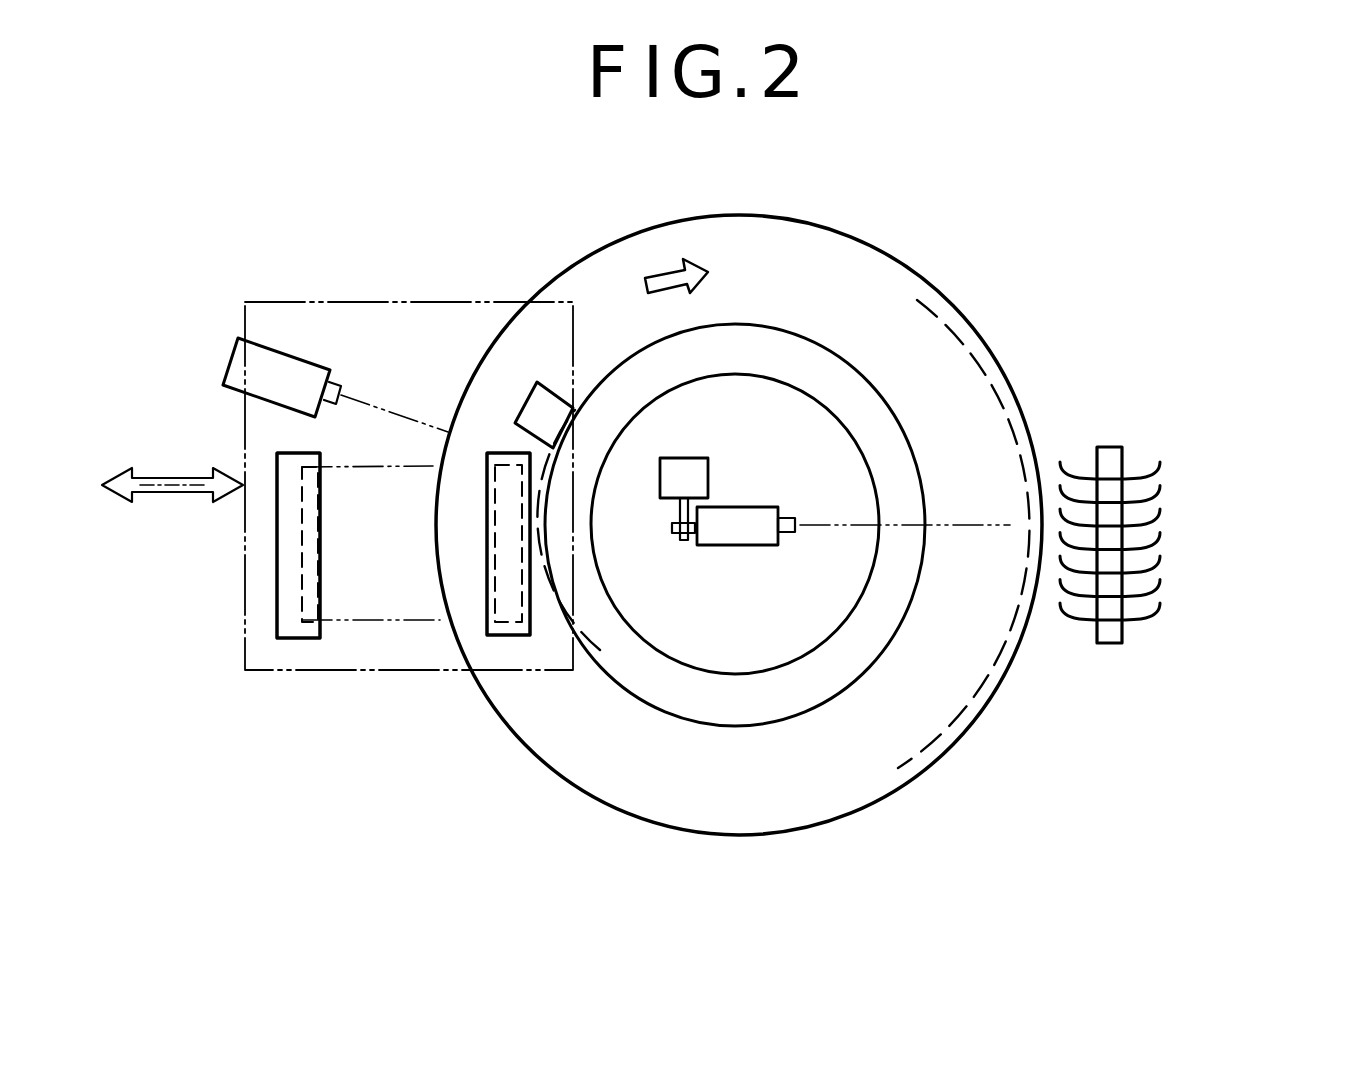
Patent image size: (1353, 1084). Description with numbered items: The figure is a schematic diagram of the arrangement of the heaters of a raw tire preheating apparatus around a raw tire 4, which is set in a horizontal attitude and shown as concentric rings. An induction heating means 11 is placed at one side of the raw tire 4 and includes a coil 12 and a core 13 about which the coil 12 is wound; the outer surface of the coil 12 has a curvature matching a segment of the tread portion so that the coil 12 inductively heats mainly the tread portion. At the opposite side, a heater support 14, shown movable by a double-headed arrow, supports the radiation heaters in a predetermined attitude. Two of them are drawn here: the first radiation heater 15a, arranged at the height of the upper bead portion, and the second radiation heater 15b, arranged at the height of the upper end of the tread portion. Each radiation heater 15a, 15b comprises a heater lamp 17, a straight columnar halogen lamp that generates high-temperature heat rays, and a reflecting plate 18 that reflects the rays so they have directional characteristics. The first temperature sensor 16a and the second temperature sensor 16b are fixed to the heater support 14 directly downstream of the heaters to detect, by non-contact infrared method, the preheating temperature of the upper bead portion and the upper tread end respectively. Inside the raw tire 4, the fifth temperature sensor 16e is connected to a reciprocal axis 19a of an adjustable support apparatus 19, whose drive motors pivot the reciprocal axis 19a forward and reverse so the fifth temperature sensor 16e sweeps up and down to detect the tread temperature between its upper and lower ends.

The raw tire 4 is at (791, 847).
The induction heating means 11 is at (1189, 500).
The coil 12 is at (1140, 560).
The core 13 is at (1108, 447).
The heater support 14 is at (243, 555).
The first radiation heater 15a is at (342, 766).
The second radiation heater 15b is at (177, 766).
The first temperature sensor 16a is at (535, 408).
The second temperature sensor 16b is at (247, 370).
The fifth temperature sensor 16e is at (750, 535).
The heater lamp 17 is at (305, 618).
The reflecting plate 18 is at (288, 603).
The adjustable support apparatus 19 is at (695, 482).
The reciprocal axis 19a is at (680, 503).